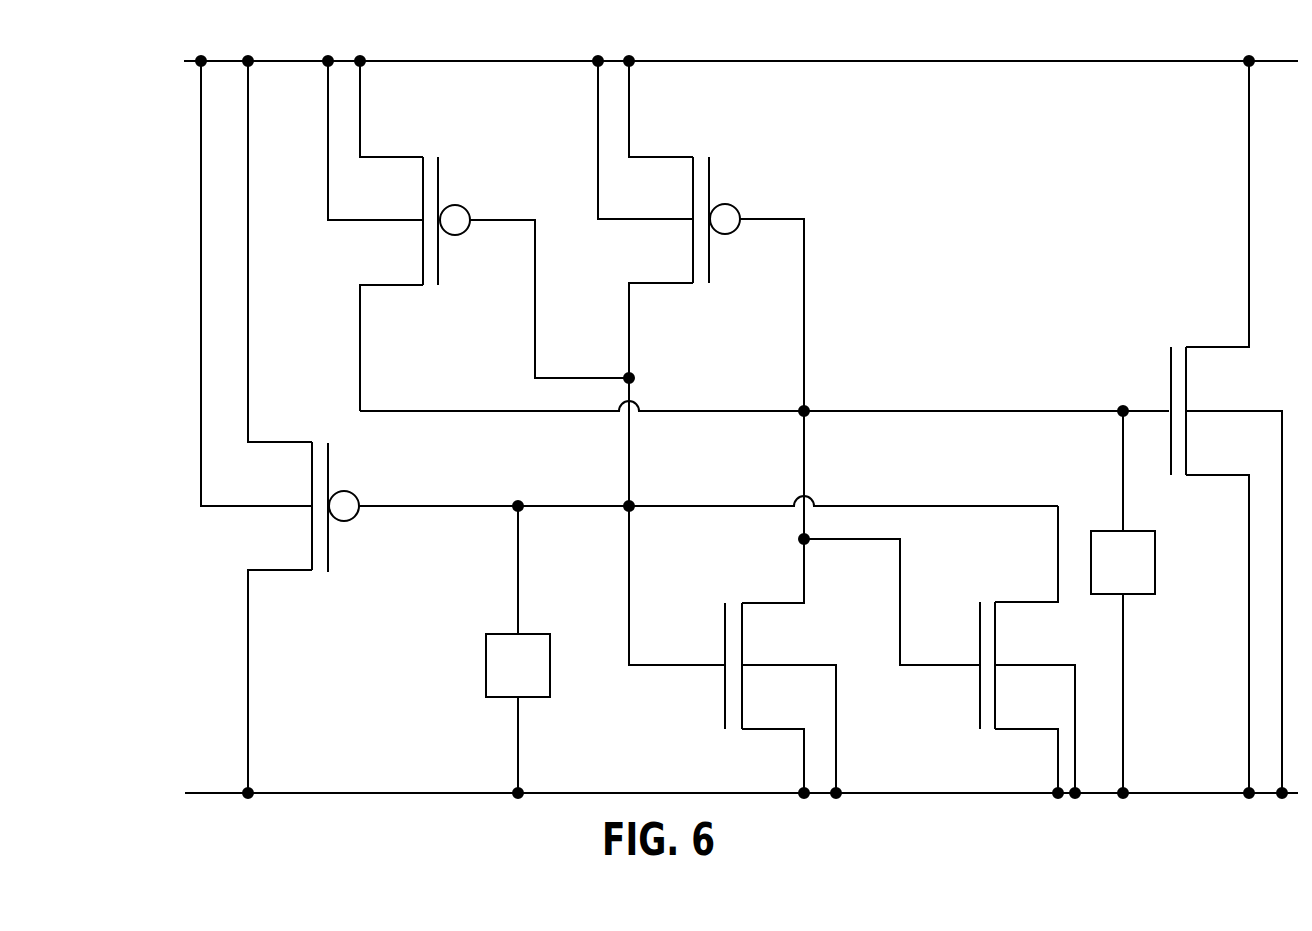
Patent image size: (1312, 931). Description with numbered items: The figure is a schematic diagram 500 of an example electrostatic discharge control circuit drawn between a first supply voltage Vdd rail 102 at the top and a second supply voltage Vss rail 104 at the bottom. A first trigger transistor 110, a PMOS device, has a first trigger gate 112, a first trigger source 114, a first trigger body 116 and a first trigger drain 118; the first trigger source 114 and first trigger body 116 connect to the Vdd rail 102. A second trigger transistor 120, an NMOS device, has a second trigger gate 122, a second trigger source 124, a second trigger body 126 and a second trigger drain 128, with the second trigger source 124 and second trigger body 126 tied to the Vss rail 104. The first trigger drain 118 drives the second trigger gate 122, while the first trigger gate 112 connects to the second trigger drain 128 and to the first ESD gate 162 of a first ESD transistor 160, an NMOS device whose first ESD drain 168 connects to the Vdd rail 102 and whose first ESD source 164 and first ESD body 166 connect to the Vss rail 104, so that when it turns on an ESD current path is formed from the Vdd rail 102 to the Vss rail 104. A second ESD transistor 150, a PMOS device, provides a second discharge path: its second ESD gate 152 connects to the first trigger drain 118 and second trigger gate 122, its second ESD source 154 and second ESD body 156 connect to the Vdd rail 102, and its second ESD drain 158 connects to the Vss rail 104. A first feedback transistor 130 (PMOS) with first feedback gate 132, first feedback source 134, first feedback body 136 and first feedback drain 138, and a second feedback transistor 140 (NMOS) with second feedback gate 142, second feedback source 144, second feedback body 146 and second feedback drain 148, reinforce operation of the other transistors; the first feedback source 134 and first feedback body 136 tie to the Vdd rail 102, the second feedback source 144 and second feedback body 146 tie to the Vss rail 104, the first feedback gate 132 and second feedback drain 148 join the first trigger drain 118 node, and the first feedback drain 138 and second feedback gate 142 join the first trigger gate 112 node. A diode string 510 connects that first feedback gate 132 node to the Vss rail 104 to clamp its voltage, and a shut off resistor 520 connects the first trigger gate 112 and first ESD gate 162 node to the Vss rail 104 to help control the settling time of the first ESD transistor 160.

The schematic diagram 500 is at (162, 86).
The first supply voltage (Vdd) rail 102 is at (1058, 63).
The second supply voltage (Vss) rail 104 is at (453, 792).
The first trigger transistor 110 is at (733, 178).
The first trigger gate 112 is at (757, 219).
The first trigger source 114 is at (630, 124).
The first trigger body 116 is at (661, 222).
The first trigger drain 118 is at (630, 330).
The second trigger transistor 120 is at (709, 620).
The second trigger gate 122 is at (678, 666).
The second trigger source 124 is at (804, 775).
The second trigger body 126 is at (775, 664).
The second trigger drain 128 is at (804, 568).
The first feedback transistor 130 is at (461, 180).
The first feedback gate 132 is at (487, 219).
The first feedback source 134 is at (361, 124).
The first feedback body 136 is at (392, 222).
The first feedback drain 138 is at (361, 330).
The second feedback transistor 140 is at (960, 712).
The second feedback gate 142 is at (948, 666).
The second feedback source 144 is at (1058, 775).
The second feedback body 146 is at (1005, 664).
The second feedback drain 148 is at (1058, 568).
The second ESD transistor 150 is at (352, 550).
The second ESD gate 152 is at (377, 505).
The second ESD source 154 is at (296, 443).
The second ESD body 156 is at (266, 508).
The second ESD drain 158 is at (249, 617).
The first ESD transistor 160 is at (1147, 366).
The first ESD gate 162 is at (1156, 410).
The first ESD source 164 is at (1249, 522).
The first ESD body 166 is at (1204, 410).
The first ESD drain 168 is at (1249, 316).
The diode string 510 is at (518, 649).
The shut off resistor 520 is at (1123, 602).